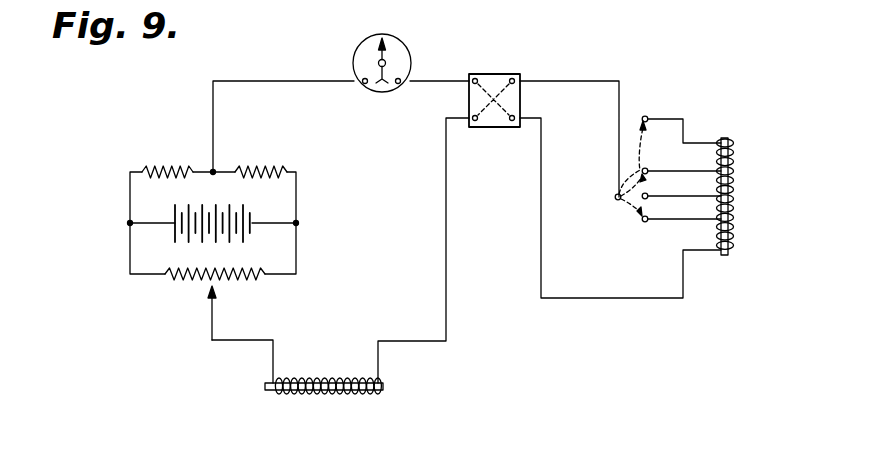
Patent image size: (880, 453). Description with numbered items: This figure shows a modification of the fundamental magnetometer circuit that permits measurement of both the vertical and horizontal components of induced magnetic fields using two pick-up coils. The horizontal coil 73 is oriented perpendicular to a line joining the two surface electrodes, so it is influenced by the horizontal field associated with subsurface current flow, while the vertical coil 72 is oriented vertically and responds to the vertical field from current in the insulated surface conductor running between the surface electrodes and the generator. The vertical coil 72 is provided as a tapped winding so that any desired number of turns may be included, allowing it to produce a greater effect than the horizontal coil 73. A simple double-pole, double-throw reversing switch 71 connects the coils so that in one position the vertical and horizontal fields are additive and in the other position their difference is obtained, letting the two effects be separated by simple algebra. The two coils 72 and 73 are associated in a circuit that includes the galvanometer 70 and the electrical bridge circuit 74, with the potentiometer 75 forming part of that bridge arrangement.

The galvanometer 70 is at (408, 52).
The reversing switch 71 is at (521, 75).
The vertical coil 72 is at (734, 205).
The horizontal coil 73 is at (363, 395).
The electrical bridge circuit 74 is at (130, 188).
The potentiometer 75 is at (188, 282).